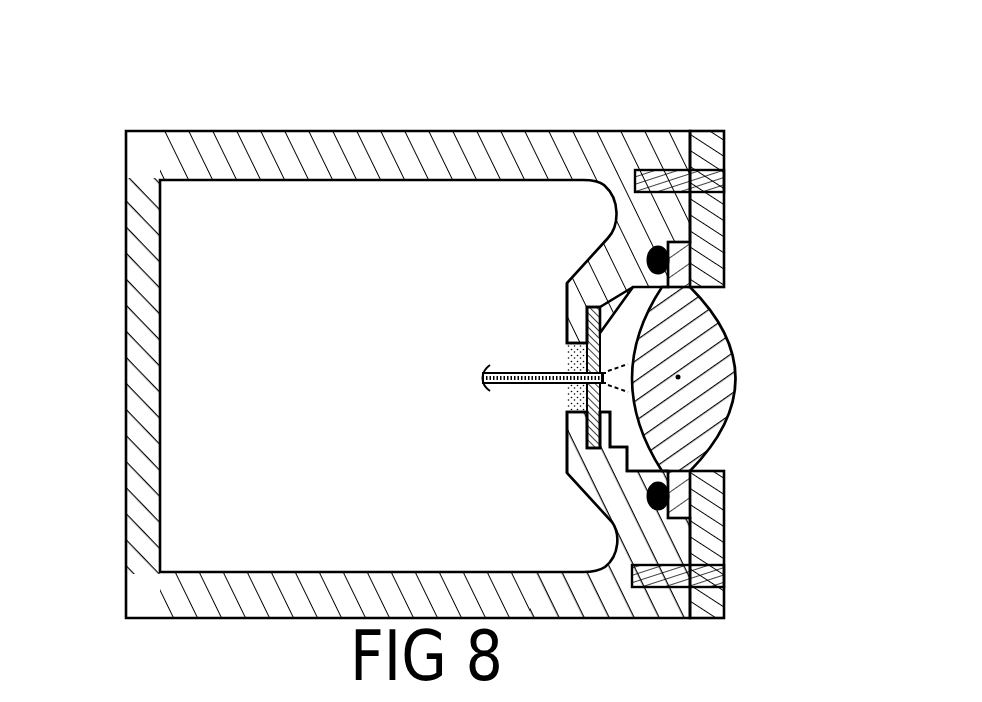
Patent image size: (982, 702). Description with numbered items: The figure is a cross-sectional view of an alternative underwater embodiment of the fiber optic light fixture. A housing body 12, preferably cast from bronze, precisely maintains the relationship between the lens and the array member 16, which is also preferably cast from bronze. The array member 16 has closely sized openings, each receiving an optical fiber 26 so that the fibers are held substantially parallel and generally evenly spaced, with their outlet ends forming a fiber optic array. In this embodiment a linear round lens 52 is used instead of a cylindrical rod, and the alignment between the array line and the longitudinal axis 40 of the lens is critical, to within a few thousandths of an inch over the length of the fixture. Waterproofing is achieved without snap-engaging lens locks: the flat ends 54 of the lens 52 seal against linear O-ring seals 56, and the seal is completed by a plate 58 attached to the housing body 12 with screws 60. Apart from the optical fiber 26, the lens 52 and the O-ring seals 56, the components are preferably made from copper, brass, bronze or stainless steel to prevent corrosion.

The housing member 12 is at (358, 131).
The array member 16 is at (600, 412).
The optical fiber 26 is at (503, 373).
The longitudinal axis of the lens 40 is at (678, 377).
The linear round lens 52 is at (733, 340).
The flat ends of the lens 54 is at (678, 258).
The linear O-ring seals 56 is at (648, 260).
The plate 58 is at (725, 512).
The screws 60 is at (725, 176).